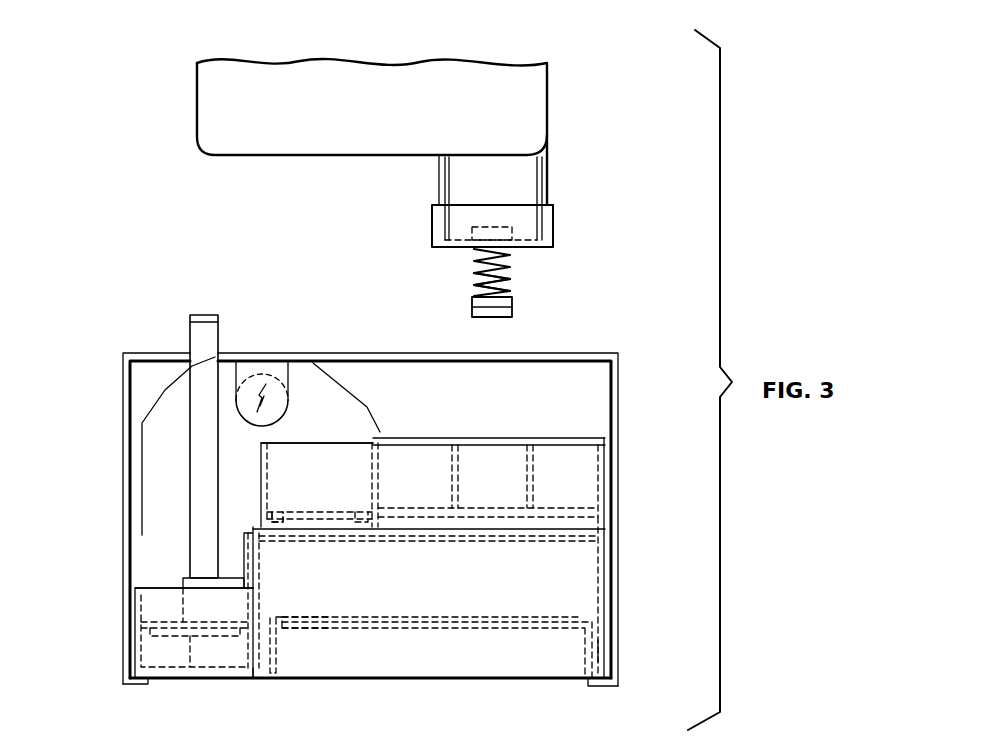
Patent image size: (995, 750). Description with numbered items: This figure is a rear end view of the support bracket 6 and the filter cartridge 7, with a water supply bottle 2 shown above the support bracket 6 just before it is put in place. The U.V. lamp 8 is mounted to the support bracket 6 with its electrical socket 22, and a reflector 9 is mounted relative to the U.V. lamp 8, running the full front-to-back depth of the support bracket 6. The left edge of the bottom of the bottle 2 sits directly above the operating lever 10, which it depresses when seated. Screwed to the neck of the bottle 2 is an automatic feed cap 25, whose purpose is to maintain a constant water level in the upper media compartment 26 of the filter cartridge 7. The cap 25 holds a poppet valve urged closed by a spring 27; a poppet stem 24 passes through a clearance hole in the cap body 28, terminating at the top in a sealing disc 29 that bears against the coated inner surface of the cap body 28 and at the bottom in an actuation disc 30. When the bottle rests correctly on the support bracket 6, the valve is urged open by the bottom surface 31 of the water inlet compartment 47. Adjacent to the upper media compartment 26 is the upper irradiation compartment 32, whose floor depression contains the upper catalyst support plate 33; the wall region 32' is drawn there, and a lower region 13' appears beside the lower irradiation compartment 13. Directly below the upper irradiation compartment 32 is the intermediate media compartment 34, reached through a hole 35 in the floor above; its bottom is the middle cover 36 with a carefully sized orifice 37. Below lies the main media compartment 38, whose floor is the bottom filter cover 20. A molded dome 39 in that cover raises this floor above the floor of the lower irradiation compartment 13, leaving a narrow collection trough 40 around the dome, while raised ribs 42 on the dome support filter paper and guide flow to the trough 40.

The water supply bottle 2 is at (197, 100).
The support bracket 6 is at (618, 420).
The filter cartridge 7 is at (492, 683).
The U.V. lamp 8 is at (261, 374).
The reflector 9 is at (150, 408).
The operating lever 10 is at (205, 315).
The lower irradiation compartment 13 is at (157, 633).
The block top plate 13' is at (154, 562).
The bottom filter cover 20 is at (280, 652).
The electrical socket 22 is at (300, 361).
The poppet stem 24 is at (512, 280).
The automatic feed cap 25 is at (562, 213).
The upper media compartment 26 is at (423, 462).
The spring 27 is at (472, 277).
The cap body 28 is at (432, 218).
The sealing disc 29 is at (496, 226).
The actuation disc 30 is at (512, 310).
The bottom surface 31 is at (493, 505).
The upper irradiation compartment 32 is at (330, 451).
The chamber top wall 32' is at (317, 424).
The upper catalyst support plate 33 is at (290, 510).
The intermediate media compartment 34 is at (288, 525).
The hole 35 is at (318, 517).
The middle cover 36 is at (352, 540).
The orifice 37 is at (313, 537).
The main media compartment 38 is at (587, 585).
The molded dome 39 is at (307, 627).
The collection trough 40 is at (257, 679).
The raised ribs 42 is at (488, 615).
The water inlet compartment 47 is at (478, 453).